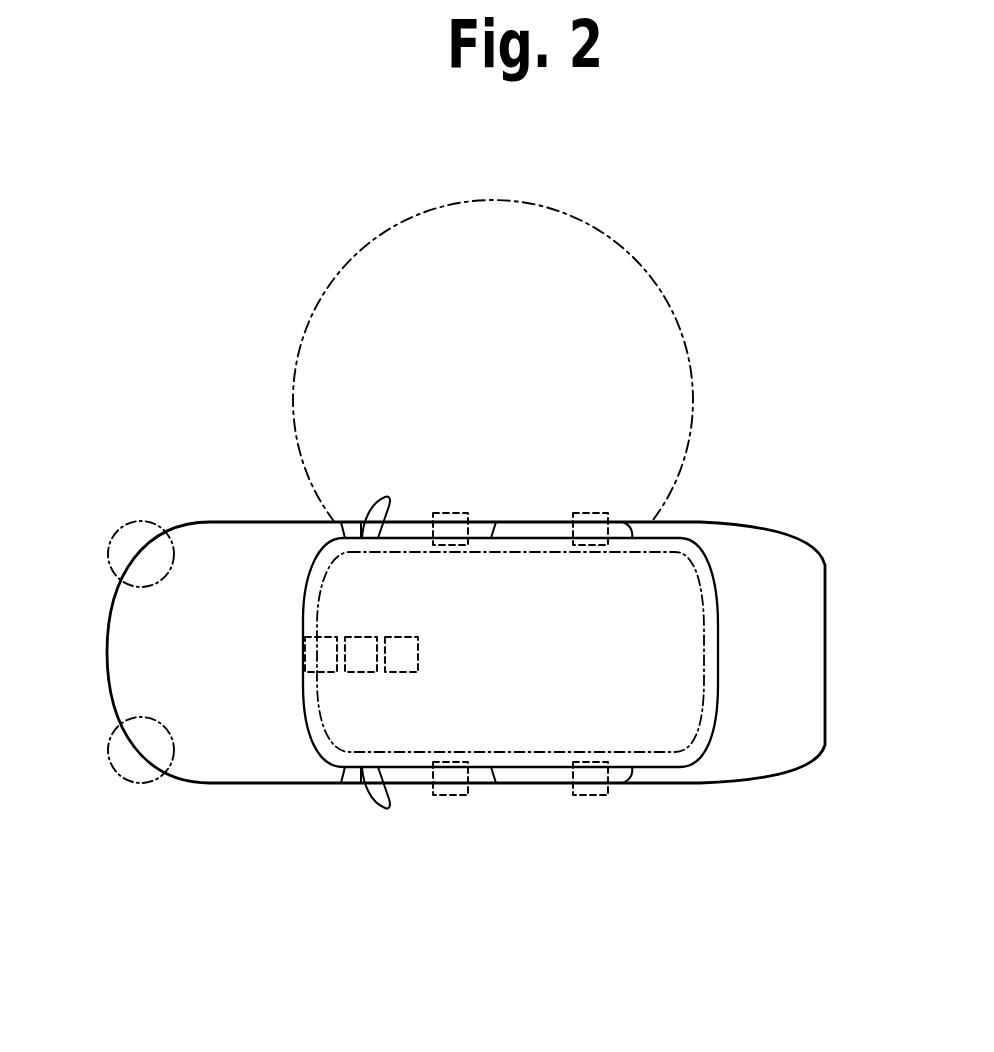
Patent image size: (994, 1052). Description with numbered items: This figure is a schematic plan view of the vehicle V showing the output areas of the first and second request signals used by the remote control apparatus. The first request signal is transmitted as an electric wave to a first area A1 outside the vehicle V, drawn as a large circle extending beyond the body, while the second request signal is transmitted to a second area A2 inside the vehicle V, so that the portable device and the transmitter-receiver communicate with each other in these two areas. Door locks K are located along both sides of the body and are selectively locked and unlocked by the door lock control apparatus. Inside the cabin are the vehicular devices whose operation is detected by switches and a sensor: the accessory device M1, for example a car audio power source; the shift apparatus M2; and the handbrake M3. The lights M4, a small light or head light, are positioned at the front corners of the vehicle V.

The vehicle V is at (725, 783).
The first area A1 is at (518, 408).
The second area A2 is at (528, 672).
The door lock K is at (452, 513).
The accessory device M1 is at (327, 637).
The shift apparatus M2 is at (360, 672).
The handbrake M3 is at (398, 637).
The light M4 is at (108, 542).